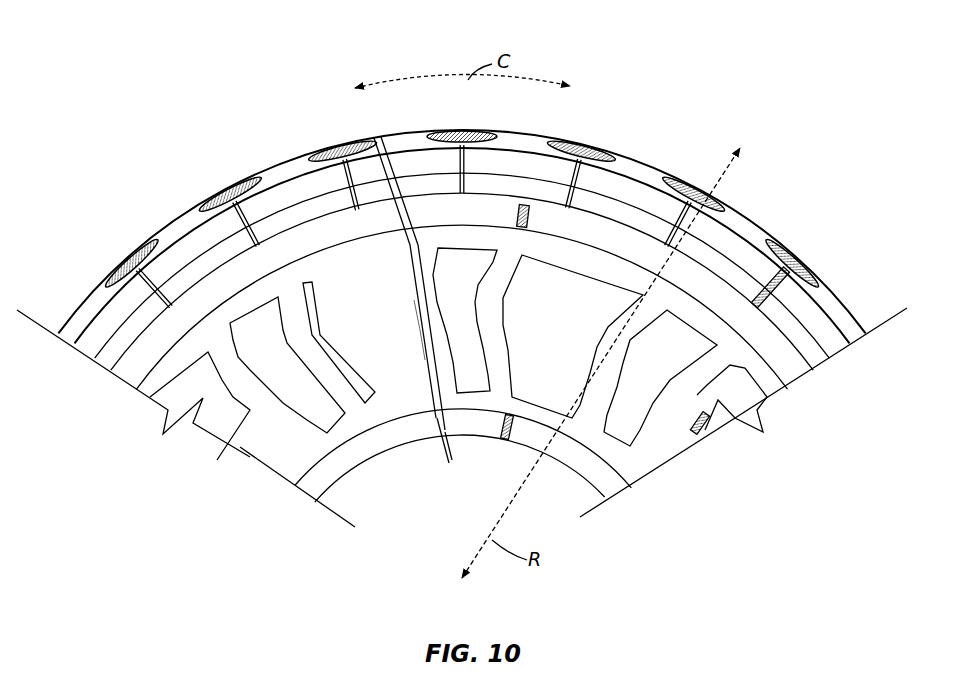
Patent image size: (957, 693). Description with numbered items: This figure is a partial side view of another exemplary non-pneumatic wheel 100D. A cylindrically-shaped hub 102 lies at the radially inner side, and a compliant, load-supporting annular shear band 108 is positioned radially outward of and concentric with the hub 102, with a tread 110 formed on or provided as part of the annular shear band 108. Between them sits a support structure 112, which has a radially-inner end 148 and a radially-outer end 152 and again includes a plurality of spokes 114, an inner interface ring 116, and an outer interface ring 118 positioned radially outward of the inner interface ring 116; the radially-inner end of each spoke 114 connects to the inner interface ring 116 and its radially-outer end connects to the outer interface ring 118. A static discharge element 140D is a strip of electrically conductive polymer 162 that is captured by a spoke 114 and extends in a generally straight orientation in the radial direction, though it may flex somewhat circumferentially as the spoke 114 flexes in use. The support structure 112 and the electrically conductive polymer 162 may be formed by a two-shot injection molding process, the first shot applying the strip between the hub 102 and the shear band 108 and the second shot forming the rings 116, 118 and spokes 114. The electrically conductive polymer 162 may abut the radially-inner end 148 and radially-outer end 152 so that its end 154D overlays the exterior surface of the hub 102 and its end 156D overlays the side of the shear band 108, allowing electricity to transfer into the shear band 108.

The non-pneumatic wheel 100D is at (120, 60).
The hub 102 is at (595, 487).
The annular shear band 108 is at (806, 380).
The tread 110 is at (755, 237).
The support structure 112 is at (705, 443).
The spoke 114 is at (440, 345).
The inner interface ring 116 is at (640, 488).
The outer interface ring 118 is at (775, 395).
The static discharge element 140D is at (412, 270).
The radially-inner end 148 is at (358, 472).
The radially-outer end 152 is at (580, 150).
The end of electrically conductive polymer 154D is at (438, 455).
The end of electrically conductive polymer 156D is at (345, 140).
The electrically conductive polymer 162 is at (414, 300).